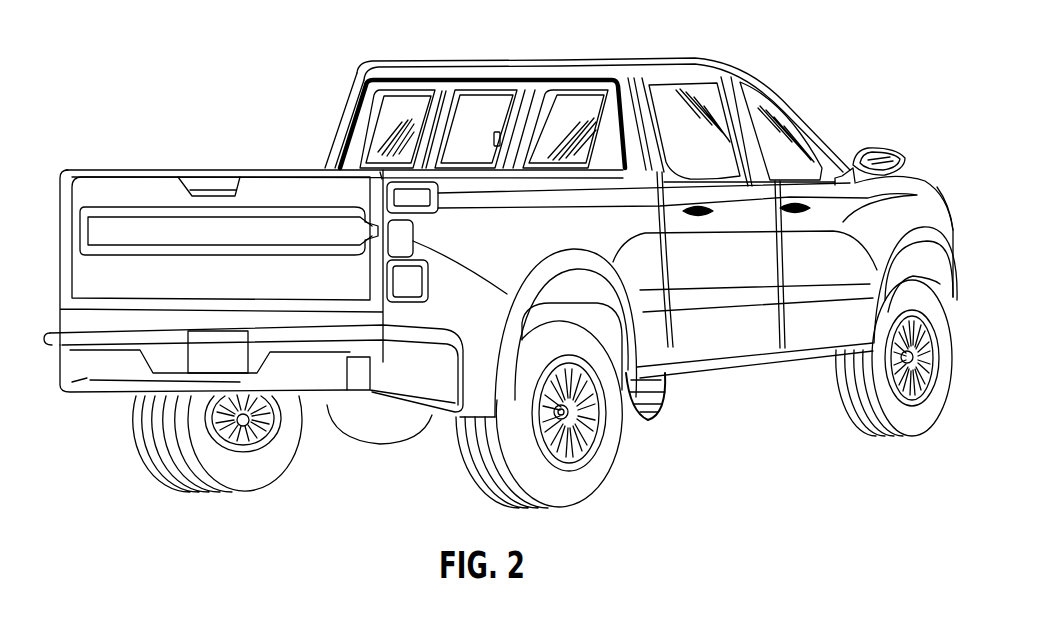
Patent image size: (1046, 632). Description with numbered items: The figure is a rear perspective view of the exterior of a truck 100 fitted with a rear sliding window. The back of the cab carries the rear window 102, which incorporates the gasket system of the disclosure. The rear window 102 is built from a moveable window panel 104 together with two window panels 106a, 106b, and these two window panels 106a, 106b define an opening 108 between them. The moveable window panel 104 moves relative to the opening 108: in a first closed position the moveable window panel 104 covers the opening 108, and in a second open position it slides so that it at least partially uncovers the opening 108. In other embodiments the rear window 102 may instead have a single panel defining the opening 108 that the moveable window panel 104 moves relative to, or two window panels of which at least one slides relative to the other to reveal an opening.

The truck 100 is at (500, 254).
The rear window 102 is at (465, 84).
The moveable window panel 104 is at (488, 108).
The window panel 106a is at (390, 118).
The window panel 106b is at (592, 108).
The opening 108 is at (455, 88).